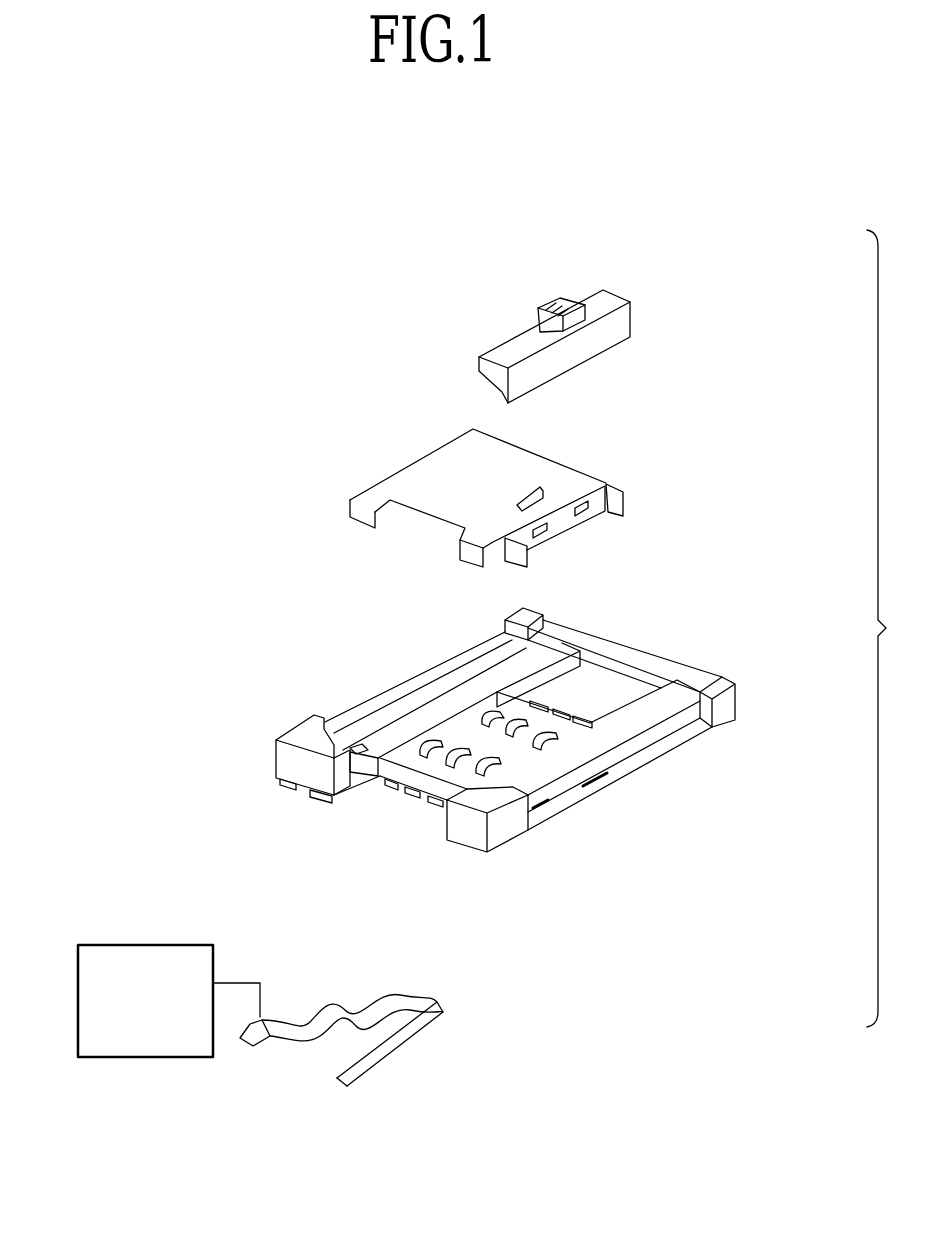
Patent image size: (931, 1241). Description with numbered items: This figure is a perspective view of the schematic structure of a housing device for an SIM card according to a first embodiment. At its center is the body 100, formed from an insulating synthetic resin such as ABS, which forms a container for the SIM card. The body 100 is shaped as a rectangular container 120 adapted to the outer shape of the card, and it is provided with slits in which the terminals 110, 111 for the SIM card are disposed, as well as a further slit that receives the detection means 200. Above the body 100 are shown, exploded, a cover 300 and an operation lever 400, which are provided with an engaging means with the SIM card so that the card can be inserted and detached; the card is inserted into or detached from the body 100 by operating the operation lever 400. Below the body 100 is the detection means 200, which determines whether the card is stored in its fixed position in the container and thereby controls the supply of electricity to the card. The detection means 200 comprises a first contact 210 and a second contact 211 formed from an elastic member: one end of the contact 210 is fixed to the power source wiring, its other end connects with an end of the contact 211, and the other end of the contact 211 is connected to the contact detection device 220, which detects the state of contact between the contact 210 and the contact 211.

The body 100 is at (742, 697).
The terminal 110 is at (393, 791).
The terminal 111 is at (584, 722).
The rectangular container 120 is at (607, 752).
The detection means 200 is at (270, 942).
The first contact 210 is at (368, 1078).
The second contact 211 is at (247, 1046).
The contact detection device 220 is at (147, 945).
The cover 300 is at (413, 452).
The operation lever 400 is at (612, 290).